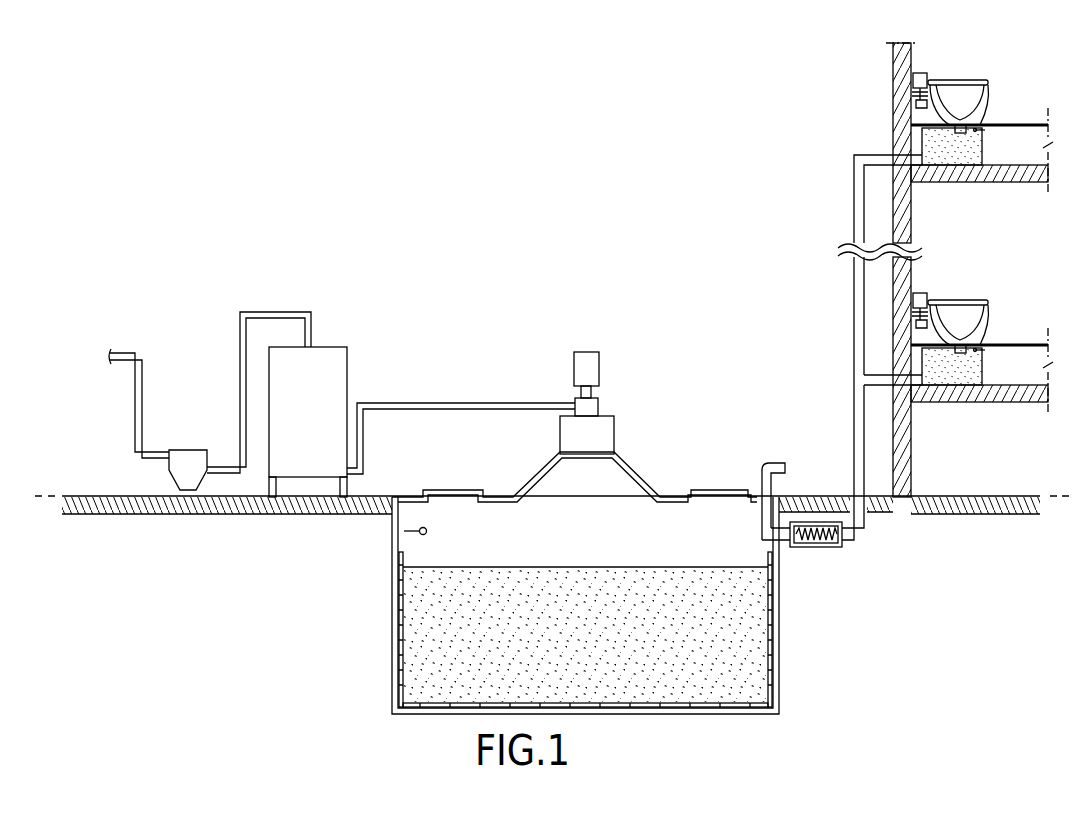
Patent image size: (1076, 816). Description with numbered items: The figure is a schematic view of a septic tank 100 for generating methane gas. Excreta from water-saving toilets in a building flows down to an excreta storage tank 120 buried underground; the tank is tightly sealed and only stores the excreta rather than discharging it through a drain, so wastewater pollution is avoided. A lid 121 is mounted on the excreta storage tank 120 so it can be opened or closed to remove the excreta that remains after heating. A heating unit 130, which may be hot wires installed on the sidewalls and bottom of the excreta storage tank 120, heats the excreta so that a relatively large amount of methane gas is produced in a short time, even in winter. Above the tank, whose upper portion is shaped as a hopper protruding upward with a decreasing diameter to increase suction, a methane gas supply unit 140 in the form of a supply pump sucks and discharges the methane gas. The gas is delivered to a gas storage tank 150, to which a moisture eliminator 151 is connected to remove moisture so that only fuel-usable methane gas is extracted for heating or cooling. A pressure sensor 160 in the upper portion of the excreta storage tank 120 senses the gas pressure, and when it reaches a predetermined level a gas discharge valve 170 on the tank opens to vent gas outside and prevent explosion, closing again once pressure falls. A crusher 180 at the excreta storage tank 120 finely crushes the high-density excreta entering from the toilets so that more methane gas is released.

The septic tank for generating methane gas 100 is at (137, 105).
The excreta storage tank 120 is at (780, 657).
The lid 121 is at (462, 490).
The heating unit 130 is at (773, 628).
The methane gas supply unit 140 is at (563, 352).
The gas storage tank 150 is at (336, 335).
The moisture eliminator 151 is at (187, 450).
The pressure sensor 160 is at (430, 531).
The gas discharge valve 170 is at (773, 462).
The crusher 180 is at (835, 548).